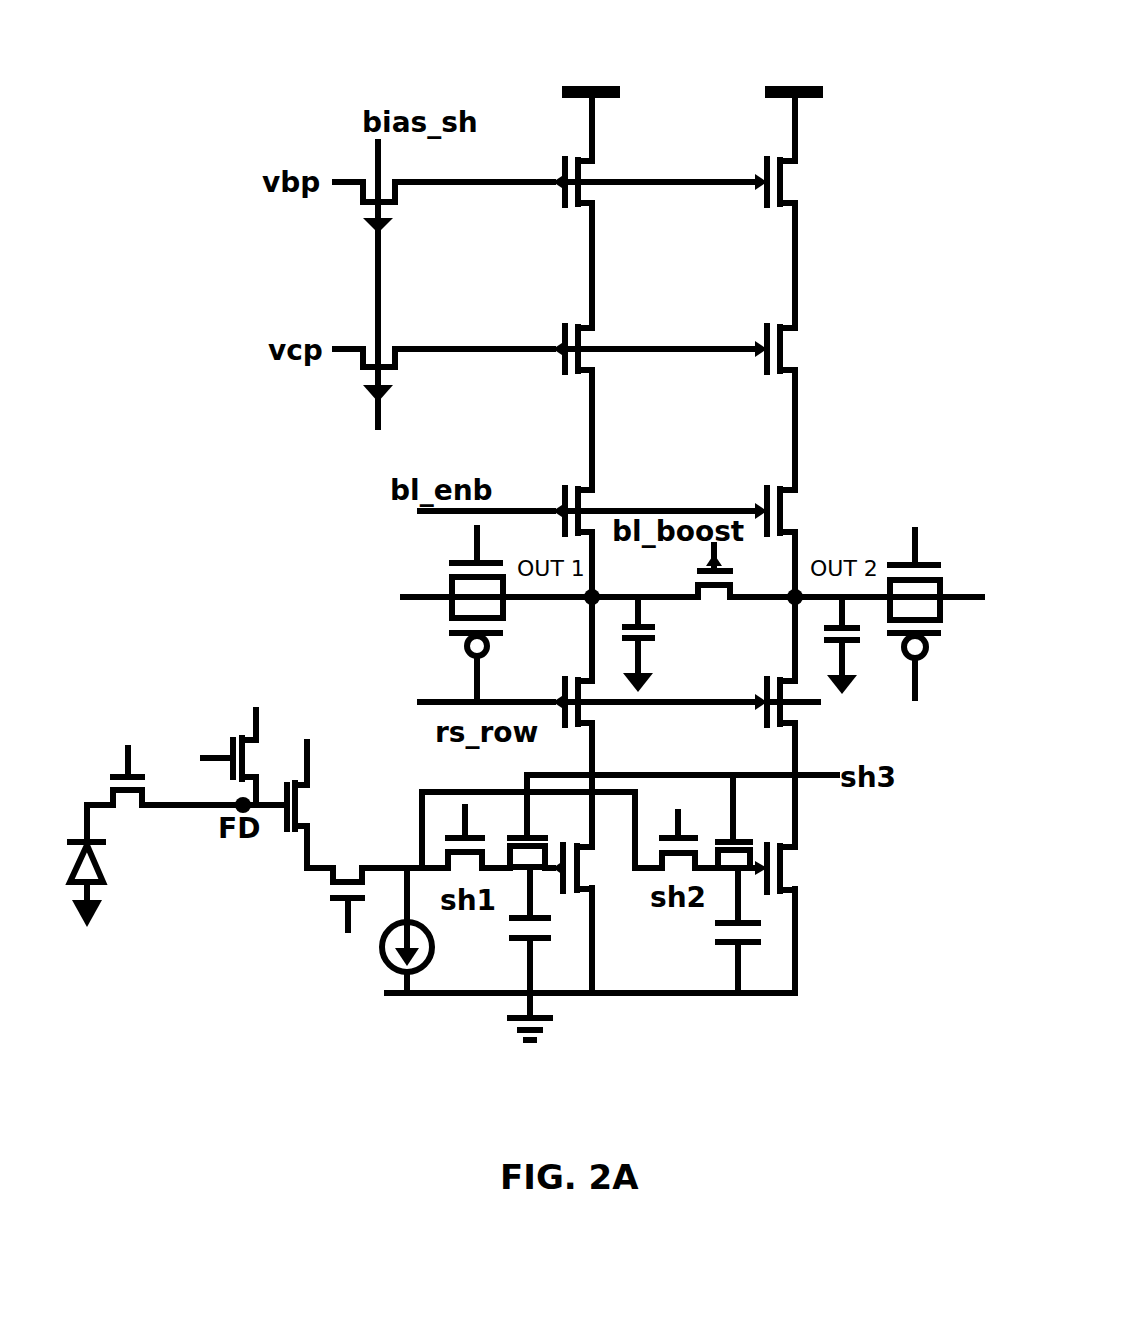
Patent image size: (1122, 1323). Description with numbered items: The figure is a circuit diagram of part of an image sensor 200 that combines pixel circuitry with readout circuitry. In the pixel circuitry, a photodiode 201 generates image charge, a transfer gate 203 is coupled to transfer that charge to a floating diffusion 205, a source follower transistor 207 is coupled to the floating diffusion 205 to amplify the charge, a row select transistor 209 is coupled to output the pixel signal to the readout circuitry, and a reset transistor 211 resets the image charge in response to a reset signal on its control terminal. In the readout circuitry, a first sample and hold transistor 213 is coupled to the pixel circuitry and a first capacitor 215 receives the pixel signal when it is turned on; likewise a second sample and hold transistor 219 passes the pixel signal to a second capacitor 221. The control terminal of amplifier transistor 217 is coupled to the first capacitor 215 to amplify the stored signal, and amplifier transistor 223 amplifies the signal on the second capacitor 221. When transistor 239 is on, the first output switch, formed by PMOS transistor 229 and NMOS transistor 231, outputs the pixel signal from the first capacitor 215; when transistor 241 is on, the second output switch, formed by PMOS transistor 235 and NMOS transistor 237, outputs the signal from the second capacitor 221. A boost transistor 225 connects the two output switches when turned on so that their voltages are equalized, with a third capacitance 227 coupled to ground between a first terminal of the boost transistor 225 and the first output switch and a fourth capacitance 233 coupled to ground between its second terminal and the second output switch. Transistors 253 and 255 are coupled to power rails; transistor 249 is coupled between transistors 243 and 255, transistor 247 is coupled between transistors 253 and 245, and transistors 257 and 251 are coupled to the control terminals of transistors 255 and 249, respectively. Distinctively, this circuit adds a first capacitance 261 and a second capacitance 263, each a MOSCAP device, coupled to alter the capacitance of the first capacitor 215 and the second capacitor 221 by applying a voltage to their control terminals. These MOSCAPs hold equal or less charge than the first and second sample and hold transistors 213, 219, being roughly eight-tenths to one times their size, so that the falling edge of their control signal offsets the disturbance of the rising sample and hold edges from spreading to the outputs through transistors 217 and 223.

The image sensor 200 is at (595, 26).
The photodiode 201 is at (100, 870).
The transfer gate 203 is at (125, 806).
The floating diffusion 205 is at (228, 808).
The source follower transistor 207 is at (312, 800).
The row select transistor 209 is at (325, 892).
The reset transistor 211 is at (262, 760).
The first sample and hold transistor 213 is at (432, 950).
The first capacitor 215 is at (518, 950).
The amplifier transistor 217 is at (590, 880).
The second sample and hold transistor 219 is at (674, 910).
The second capacitor 221 is at (735, 952).
The amplifier transistor 223 is at (797, 872).
The boost transistor 225 is at (712, 600).
The third capacitance 227 is at (655, 635).
The PMOS transistor 229 is at (508, 625).
The NMOS transistor 231 is at (445, 570).
The fourth capacitance 233 is at (860, 680).
The PMOS transistor 235 is at (938, 650).
The NMOS transistor 237 is at (925, 545).
The transistor 239 is at (596, 712).
The transistor 241 is at (760, 712).
The transistor 243 is at (568, 480).
The transistor 245 is at (770, 480).
The transistor 247 is at (770, 318).
The transistor 249 is at (568, 318).
The transistor 251 is at (362, 333).
The transistor 253 is at (770, 152).
The transistor 255 is at (568, 152).
The transistor 257 is at (362, 165).
The first capacitance 261 is at (515, 825).
The second capacitance 263 is at (728, 830).